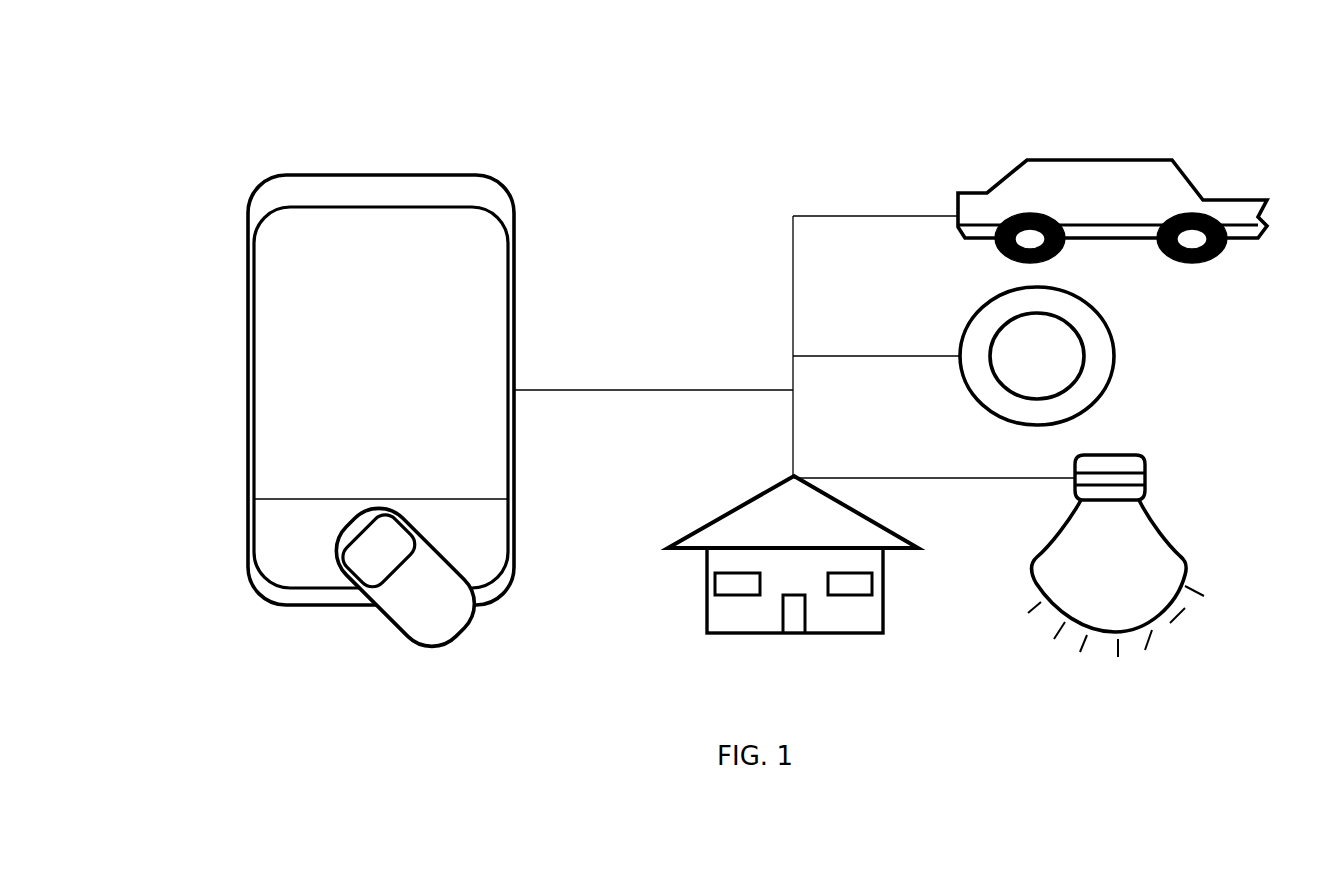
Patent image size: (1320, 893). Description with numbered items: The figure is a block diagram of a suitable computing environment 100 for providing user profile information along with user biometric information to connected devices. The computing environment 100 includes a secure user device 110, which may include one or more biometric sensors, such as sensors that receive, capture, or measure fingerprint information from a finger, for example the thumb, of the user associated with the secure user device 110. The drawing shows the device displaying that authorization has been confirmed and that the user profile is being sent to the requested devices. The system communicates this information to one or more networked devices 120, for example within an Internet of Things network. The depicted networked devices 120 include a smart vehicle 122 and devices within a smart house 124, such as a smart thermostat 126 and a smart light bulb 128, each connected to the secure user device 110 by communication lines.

The computing environment 100 is at (1130, 64).
The secure user device 110 is at (514, 258).
The networked devices 120 is at (862, 154).
The smart vehicle 122 is at (1180, 176).
The smart house 124 is at (826, 482).
The smart thermostat 126 is at (1103, 341).
The smart light bulb 128 is at (1135, 466).